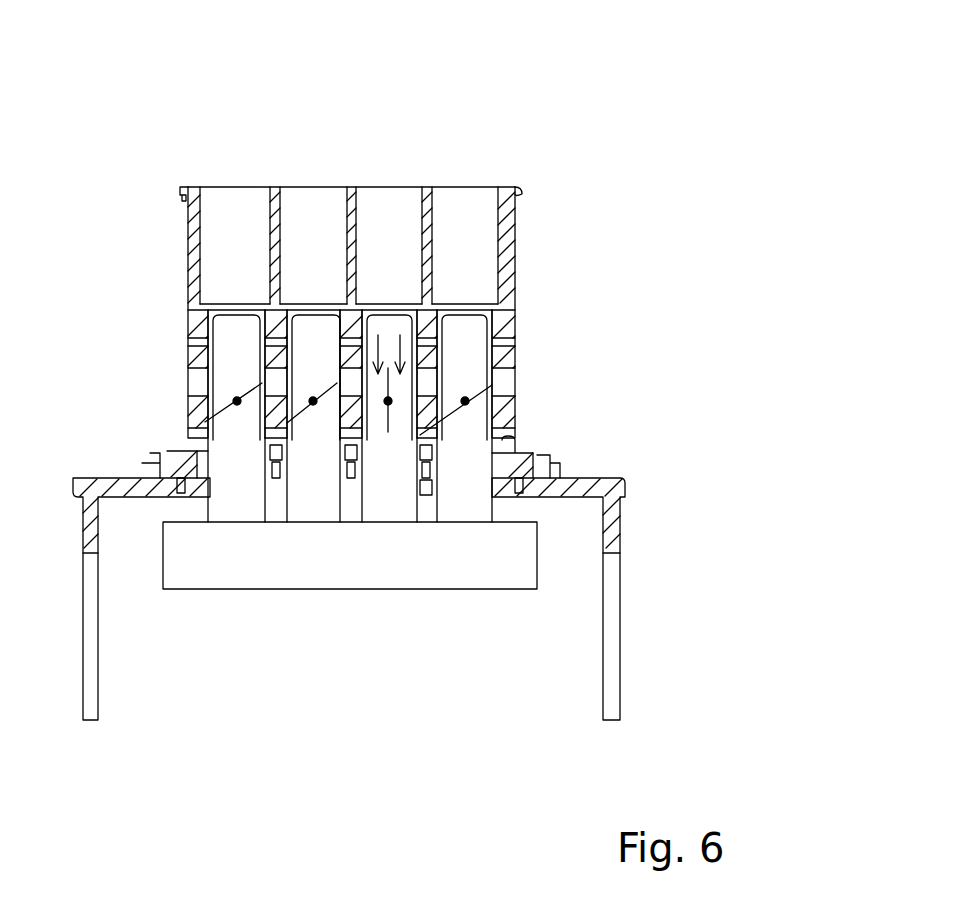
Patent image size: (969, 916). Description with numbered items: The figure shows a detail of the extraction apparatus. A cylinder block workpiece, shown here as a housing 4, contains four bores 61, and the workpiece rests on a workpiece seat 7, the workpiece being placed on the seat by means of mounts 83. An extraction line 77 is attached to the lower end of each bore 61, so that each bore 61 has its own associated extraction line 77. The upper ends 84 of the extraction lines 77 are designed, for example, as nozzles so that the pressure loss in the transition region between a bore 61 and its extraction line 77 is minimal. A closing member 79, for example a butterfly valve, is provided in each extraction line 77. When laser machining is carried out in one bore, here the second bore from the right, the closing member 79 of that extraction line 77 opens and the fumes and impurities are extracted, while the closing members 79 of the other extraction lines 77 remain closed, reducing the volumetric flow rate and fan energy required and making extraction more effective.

The housing 4 is at (516, 189).
The bore 61 is at (233, 225).
The end of extraction line 84 is at (200, 306).
The extraction line 77 is at (192, 508).
The closing member 79 is at (337, 383).
The mount 83 is at (180, 452).
The workpiece seat 7 is at (590, 497).